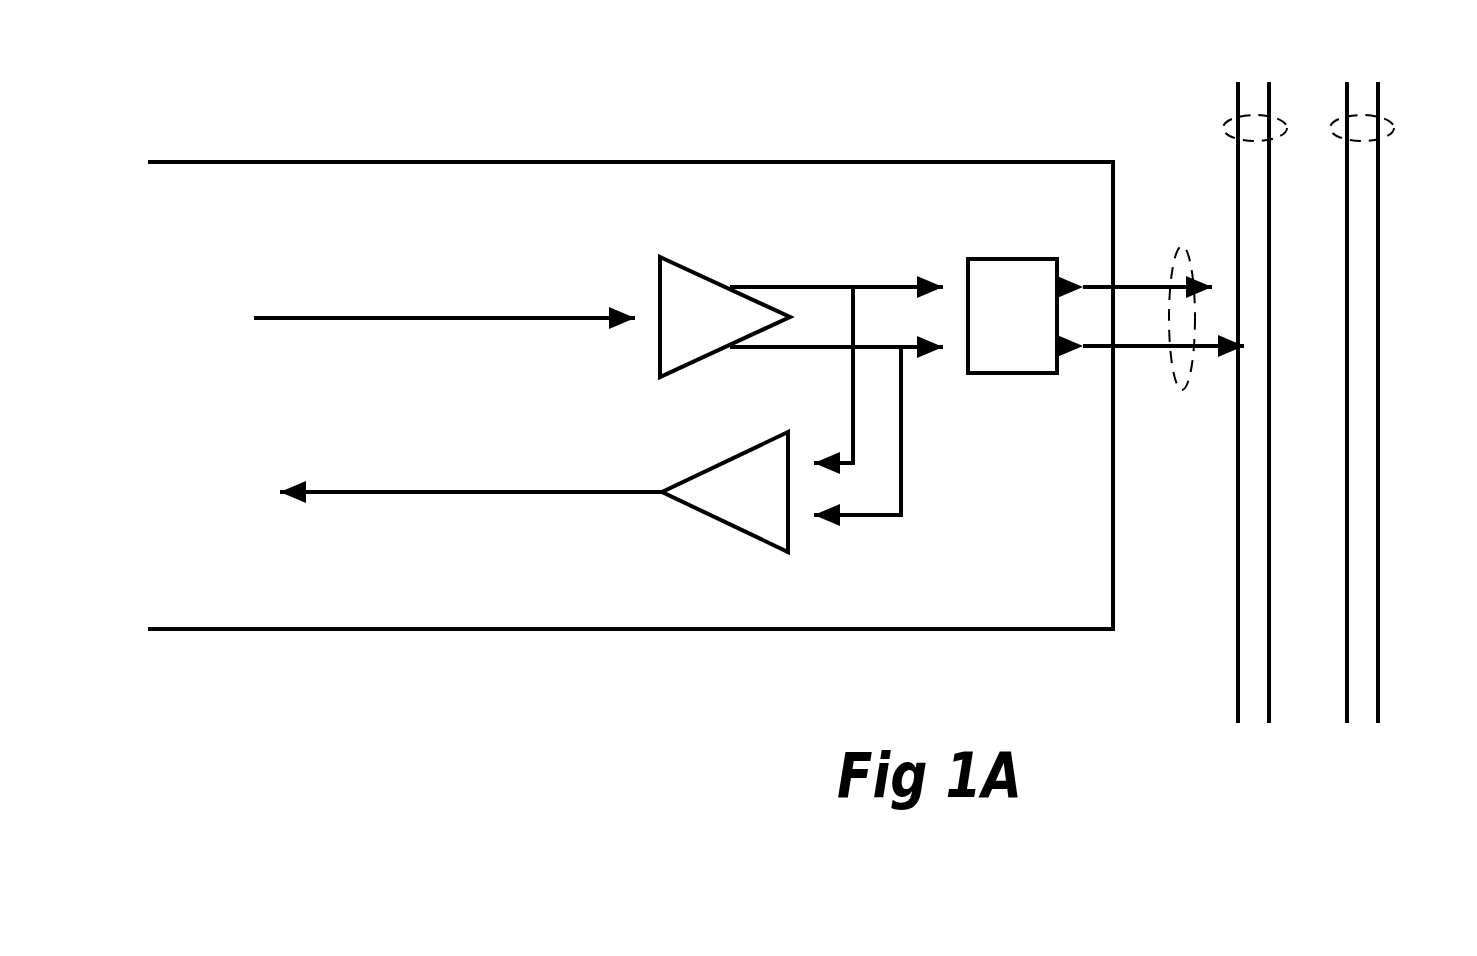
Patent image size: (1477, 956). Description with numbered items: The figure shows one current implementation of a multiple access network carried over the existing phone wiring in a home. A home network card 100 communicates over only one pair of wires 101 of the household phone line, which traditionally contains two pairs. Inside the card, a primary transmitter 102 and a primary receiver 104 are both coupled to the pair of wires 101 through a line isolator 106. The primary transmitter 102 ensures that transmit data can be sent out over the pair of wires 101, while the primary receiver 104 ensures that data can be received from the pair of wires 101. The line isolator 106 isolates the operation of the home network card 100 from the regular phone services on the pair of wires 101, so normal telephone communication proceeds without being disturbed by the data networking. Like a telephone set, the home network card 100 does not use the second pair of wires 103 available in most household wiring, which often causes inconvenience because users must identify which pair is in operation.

The home network card 100 is at (1001, 172).
The pair of wires 101 is at (1226, 122).
The primary transmitter 102 is at (684, 273).
The second pair of wires 103 is at (1389, 122).
The primary receiver 104 is at (727, 468).
The line isolator 106 is at (997, 272).